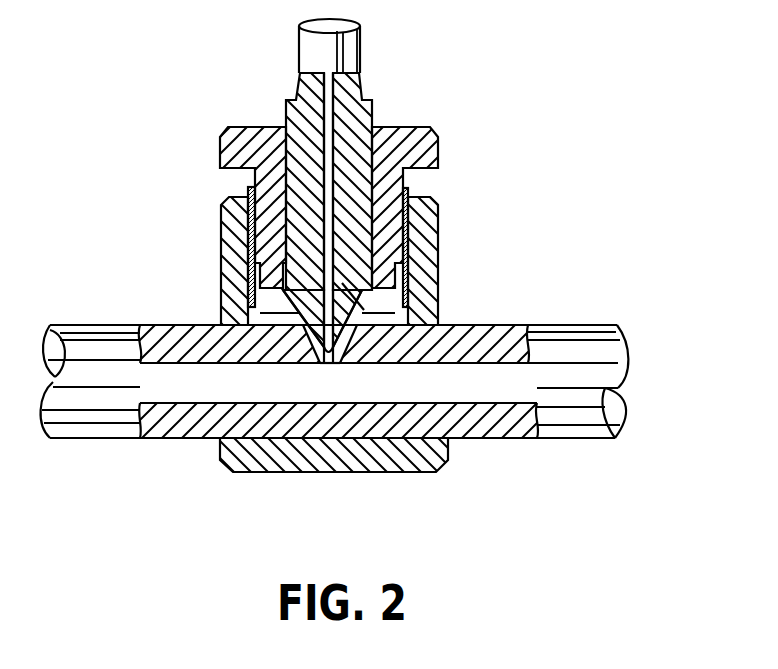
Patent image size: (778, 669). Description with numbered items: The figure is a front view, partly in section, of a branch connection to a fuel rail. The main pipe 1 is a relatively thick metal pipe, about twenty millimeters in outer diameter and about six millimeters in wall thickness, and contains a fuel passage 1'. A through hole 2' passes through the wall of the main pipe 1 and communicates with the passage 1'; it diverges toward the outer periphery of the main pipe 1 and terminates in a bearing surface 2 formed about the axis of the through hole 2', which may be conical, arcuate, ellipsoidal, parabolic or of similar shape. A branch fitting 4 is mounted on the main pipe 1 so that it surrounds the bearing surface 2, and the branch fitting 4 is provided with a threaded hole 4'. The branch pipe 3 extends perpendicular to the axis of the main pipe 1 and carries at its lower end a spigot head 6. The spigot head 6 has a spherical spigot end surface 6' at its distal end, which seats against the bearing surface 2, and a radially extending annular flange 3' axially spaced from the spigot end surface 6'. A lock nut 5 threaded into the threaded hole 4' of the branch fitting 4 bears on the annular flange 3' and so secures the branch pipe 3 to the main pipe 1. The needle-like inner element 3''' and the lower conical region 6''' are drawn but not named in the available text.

The main pipe 1 is at (335, 346).
The passage 1' is at (331, 326).
The bearing surface 2 is at (400, 404).
The through hole 2' is at (344, 455).
The branch pipe 3 is at (354, 154).
The annular flange 3' is at (293, 247).
The needle 3''' is at (282, 213).
The branch fitting 4 is at (321, 357).
The threaded hole 4' is at (440, 232).
The lock nut 5 is at (383, 182).
The spigot head 6 is at (375, 315).
The spigot end surface 6' is at (399, 411).
The insert cone surface 6''' is at (300, 405).